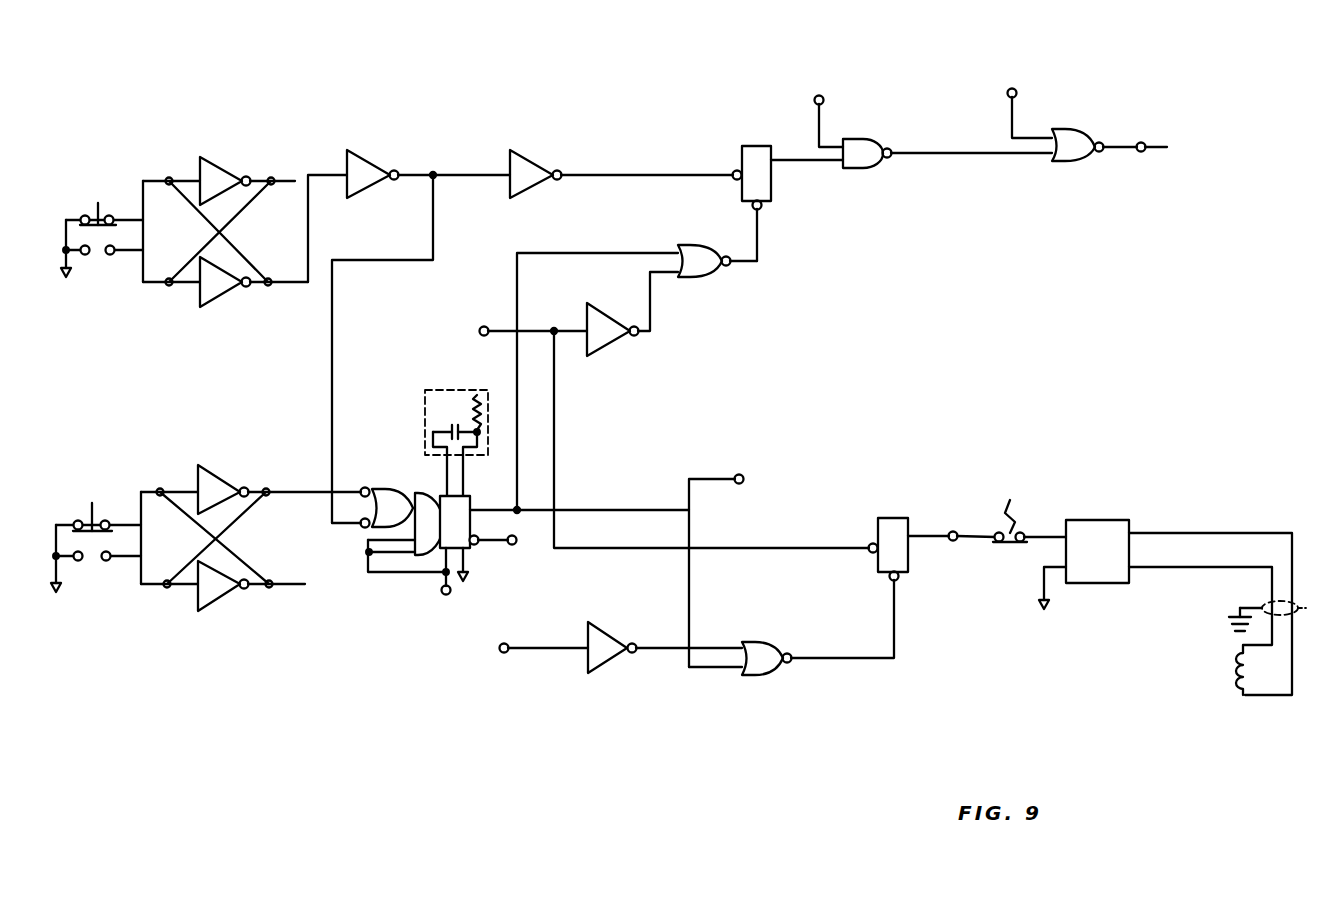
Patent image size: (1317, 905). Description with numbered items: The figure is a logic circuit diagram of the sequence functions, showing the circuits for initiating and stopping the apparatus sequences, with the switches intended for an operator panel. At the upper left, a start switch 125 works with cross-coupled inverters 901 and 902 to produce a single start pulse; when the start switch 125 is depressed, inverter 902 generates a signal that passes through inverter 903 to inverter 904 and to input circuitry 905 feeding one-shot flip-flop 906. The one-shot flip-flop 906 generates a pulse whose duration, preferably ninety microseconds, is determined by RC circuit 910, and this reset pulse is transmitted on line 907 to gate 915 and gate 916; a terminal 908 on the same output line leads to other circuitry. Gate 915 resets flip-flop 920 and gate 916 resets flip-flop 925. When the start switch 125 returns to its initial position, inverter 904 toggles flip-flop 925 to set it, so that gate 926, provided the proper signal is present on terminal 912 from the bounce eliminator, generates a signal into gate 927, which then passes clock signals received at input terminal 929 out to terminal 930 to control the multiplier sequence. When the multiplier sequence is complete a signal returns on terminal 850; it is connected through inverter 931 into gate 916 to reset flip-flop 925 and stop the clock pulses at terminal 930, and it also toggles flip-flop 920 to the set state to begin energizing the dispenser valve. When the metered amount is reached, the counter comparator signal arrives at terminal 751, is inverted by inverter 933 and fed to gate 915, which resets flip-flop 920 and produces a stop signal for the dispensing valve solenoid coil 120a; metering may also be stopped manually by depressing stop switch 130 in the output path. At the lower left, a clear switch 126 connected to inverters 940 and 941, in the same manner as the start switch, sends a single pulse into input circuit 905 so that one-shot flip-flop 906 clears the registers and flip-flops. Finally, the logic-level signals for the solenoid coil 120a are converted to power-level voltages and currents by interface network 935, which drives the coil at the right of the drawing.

The start switch 125 is at (84, 200).
The clear switch 126 is at (80, 510).
The stop switch 130 is at (1022, 522).
The dispensing valve solenoid coil 120a is at (1232, 679).
The terminal 751 is at (508, 645).
The output terminal 850 is at (478, 330).
The inverter 901 is at (217, 165).
The inverter 902 is at (218, 302).
The inverter 903 is at (362, 193).
The inverter 904 is at (530, 188).
The input circuitry 905 is at (392, 490).
The one-shot flip-flop 906 is at (468, 496).
The line 907 is at (497, 513).
The terminal to FIG. 8 908 is at (745, 473).
The RC circuit 910 is at (432, 390).
The terminal 912 is at (823, 98).
The gate 915 is at (780, 640).
The gate 916 is at (700, 277).
The flip-flop 920 is at (913, 573).
The flip-flop 925 is at (773, 188).
The gate 926 is at (868, 167).
The gate 927 is at (1070, 162).
The input terminal 929 is at (1017, 90).
The terminal 930 is at (1175, 146).
The inverter 931 is at (598, 352).
The inverter 933 is at (617, 633).
The interface network 935 is at (1165, 607).
The inverter 940 is at (217, 473).
The inverter 941 is at (220, 598).